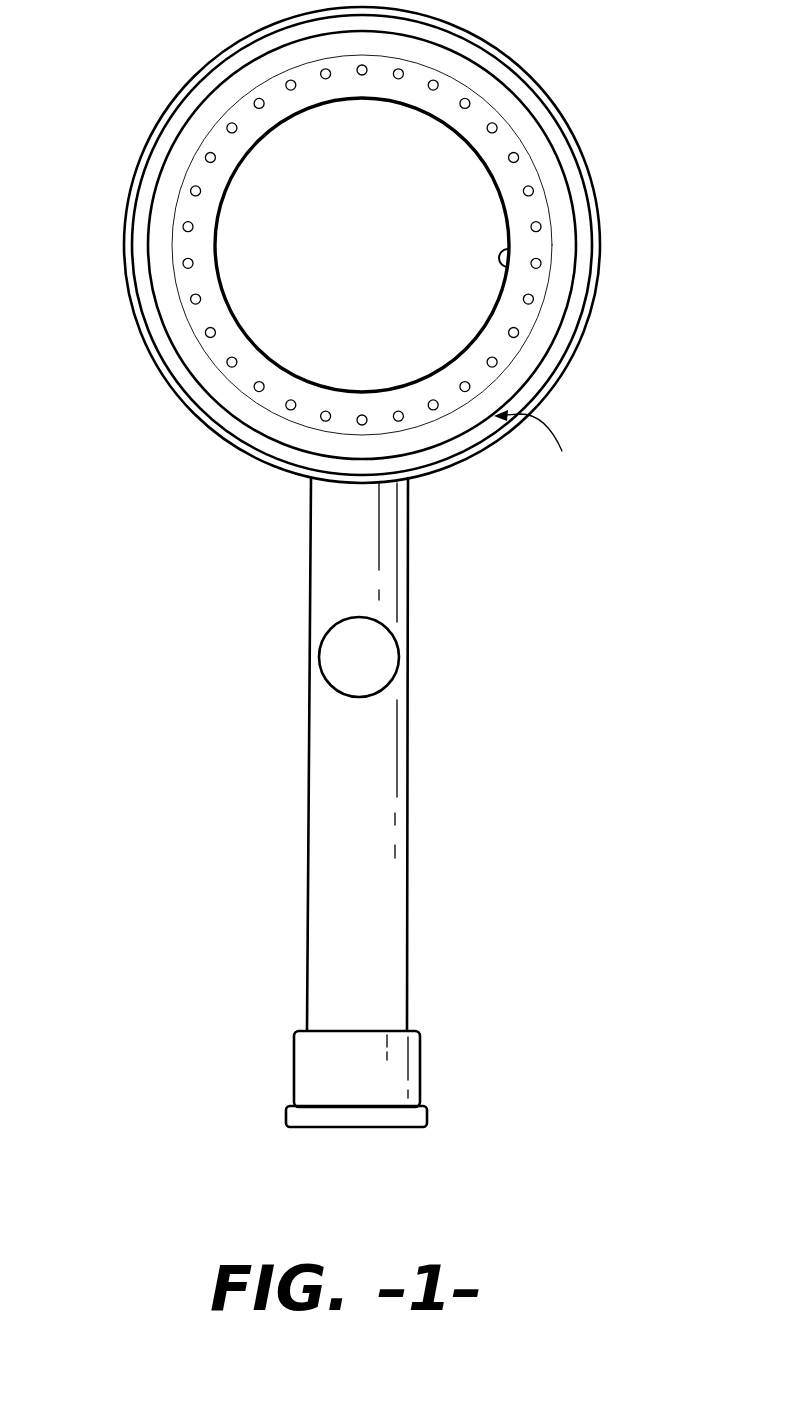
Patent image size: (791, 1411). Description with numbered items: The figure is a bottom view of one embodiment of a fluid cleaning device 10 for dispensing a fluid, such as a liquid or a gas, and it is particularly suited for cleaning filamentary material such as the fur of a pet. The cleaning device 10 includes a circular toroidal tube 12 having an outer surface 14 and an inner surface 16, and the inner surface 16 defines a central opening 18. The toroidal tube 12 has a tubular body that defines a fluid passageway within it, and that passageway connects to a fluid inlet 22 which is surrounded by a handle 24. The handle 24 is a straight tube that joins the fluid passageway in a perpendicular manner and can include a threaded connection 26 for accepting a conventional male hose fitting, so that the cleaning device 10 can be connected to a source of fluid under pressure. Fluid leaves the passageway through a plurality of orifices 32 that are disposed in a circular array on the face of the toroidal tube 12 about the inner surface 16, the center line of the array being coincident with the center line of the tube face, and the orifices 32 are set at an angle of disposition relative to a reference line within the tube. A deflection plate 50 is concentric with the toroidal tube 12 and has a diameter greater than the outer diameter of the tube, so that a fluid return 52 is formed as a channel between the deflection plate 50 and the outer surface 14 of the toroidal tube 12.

The fluid cleaning device 10 is at (360, 608).
The circular toroidal tube 12 is at (533, 330).
The outer surface 14 is at (560, 148).
The inner surface 16 is at (498, 250).
The opening 18 is at (287, 310).
The fluid inlet 22 is at (373, 1141).
The handle 24 is at (308, 786).
The threaded connection 26 is at (309, 1128).
The orifices 32 is at (234, 124).
The deflection plate 50 is at (140, 167).
The fluid return 52 is at (540, 451).